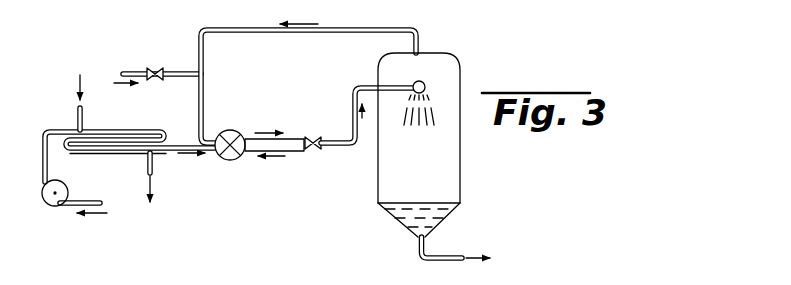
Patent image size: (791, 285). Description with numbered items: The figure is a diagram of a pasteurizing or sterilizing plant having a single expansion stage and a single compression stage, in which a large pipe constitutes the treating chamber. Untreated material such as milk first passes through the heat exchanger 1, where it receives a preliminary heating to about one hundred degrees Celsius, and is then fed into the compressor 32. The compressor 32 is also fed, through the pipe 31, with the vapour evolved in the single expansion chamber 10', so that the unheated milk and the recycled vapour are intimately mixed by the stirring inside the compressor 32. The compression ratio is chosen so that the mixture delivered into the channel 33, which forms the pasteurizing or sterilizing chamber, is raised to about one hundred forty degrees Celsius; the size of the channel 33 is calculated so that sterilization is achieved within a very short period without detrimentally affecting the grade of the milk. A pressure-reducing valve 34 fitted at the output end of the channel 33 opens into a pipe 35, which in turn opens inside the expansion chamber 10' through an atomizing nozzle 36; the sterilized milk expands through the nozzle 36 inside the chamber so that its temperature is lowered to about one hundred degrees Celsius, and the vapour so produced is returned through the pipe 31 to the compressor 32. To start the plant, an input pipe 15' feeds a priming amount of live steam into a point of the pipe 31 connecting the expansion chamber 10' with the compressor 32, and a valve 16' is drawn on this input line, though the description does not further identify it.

The heat exchanger 1 is at (110, 140).
The expansion chamber 10' is at (437, 155).
The input pipe 15' is at (157, 63).
The valve 16' is at (169, 62).
The pipe 31 is at (381, 28).
The compressor 32 is at (228, 138).
The channel 33 is at (283, 143).
The pressure-reducing valve 34 is at (309, 149).
The pipe 35 is at (359, 86).
The atomizing nozzle 36 is at (425, 82).